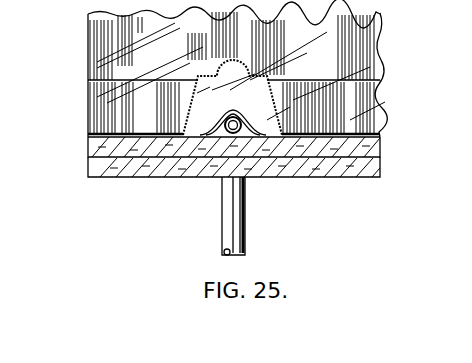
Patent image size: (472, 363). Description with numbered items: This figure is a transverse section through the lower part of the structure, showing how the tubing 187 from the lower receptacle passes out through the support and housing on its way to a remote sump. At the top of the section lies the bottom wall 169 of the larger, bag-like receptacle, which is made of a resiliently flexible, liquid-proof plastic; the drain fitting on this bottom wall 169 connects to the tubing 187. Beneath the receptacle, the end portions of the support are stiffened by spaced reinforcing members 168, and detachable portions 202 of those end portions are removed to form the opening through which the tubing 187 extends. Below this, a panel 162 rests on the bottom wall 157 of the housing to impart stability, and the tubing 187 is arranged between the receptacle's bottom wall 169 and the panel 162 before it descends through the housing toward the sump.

The spaced reinforcing members 168 is at (110, 112).
The detachable portions 202 is at (256, 88).
The bottom wall 169 is at (363, 133).
The panel 162 is at (138, 152).
The bottom wall 157 is at (190, 167).
The tubing 187 is at (245, 208).